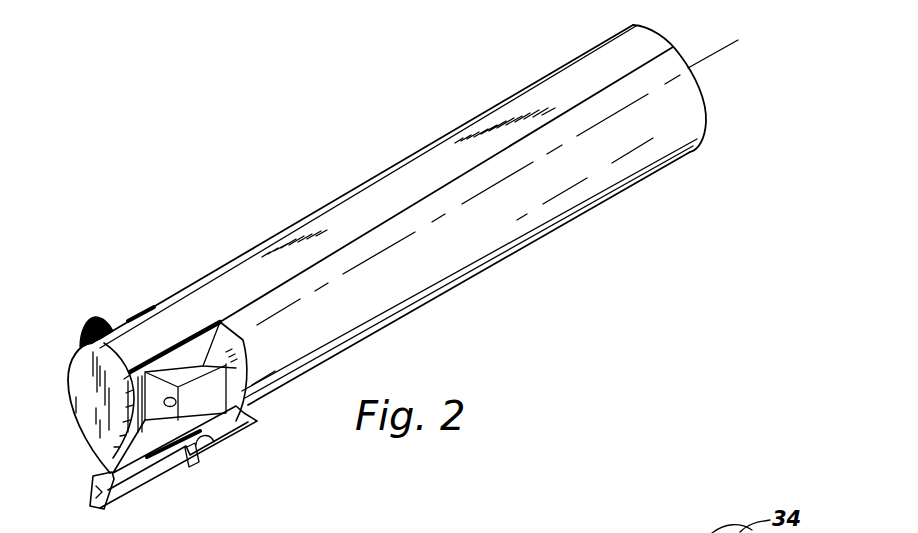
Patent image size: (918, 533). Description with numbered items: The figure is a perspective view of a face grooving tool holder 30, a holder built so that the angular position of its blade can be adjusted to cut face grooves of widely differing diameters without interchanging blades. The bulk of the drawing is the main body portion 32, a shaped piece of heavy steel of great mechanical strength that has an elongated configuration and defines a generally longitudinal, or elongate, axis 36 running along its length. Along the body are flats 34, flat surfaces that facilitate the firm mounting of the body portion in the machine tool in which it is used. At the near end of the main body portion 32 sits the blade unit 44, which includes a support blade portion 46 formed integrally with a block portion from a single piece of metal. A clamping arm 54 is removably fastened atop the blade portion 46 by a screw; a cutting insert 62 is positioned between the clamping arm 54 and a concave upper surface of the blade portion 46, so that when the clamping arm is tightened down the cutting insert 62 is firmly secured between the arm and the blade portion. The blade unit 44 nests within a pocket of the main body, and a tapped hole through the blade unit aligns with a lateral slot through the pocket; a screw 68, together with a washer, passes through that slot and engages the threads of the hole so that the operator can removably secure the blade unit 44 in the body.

The tool holder 30 is at (387, 269).
The main body portion 32 is at (392, 166).
The flats 34 is at (643, 47).
The longitudinal axis 36 is at (700, 65).
The blade unit 44 is at (214, 474).
The support blade portion 46 is at (160, 478).
The clamping arm 54 is at (195, 372).
The cutting insert 62 is at (100, 477).
The screw 68 is at (84, 326).